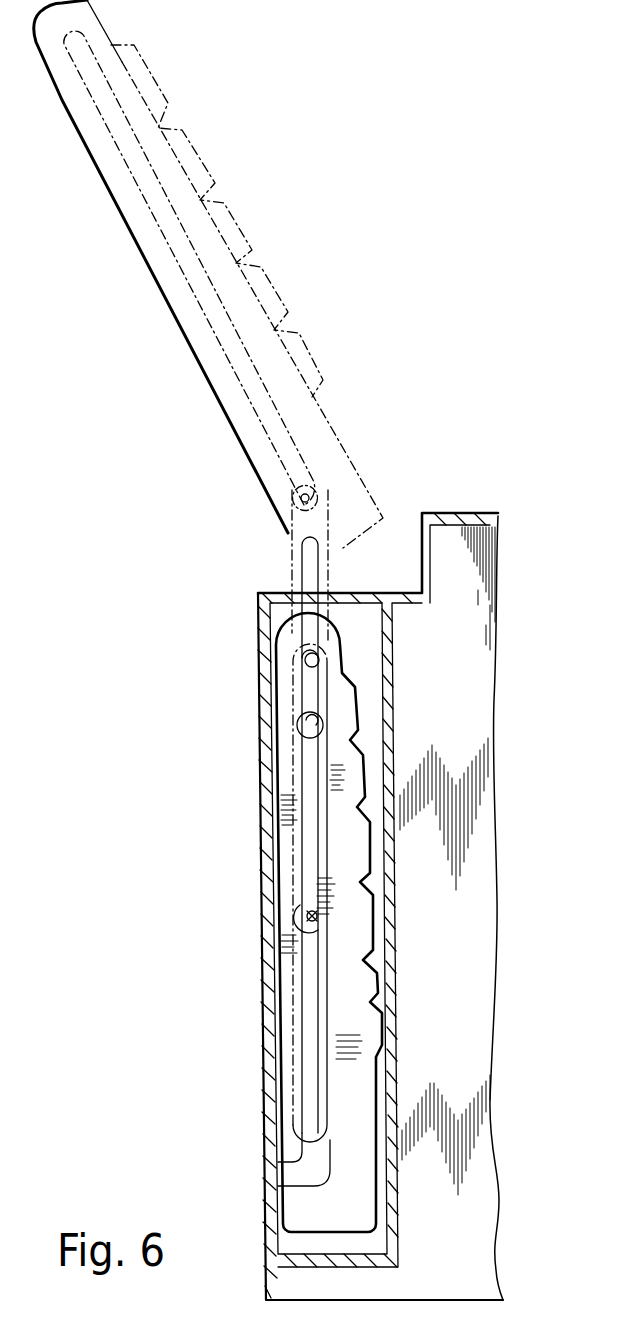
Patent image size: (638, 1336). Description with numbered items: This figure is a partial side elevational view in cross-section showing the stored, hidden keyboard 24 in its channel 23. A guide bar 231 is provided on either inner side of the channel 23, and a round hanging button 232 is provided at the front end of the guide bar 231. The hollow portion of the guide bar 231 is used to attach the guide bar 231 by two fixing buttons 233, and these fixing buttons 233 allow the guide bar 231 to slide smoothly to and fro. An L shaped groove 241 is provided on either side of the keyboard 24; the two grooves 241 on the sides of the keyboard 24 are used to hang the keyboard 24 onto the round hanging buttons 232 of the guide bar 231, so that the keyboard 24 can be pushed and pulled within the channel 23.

The channel 23 is at (368, 593).
The keyboard 24 is at (147, 243).
The L shaped groove 241 is at (215, 313).
The guide bar 231 is at (330, 553).
The round hanging button 232 is at (292, 508).
The fixing button 233 is at (300, 913).